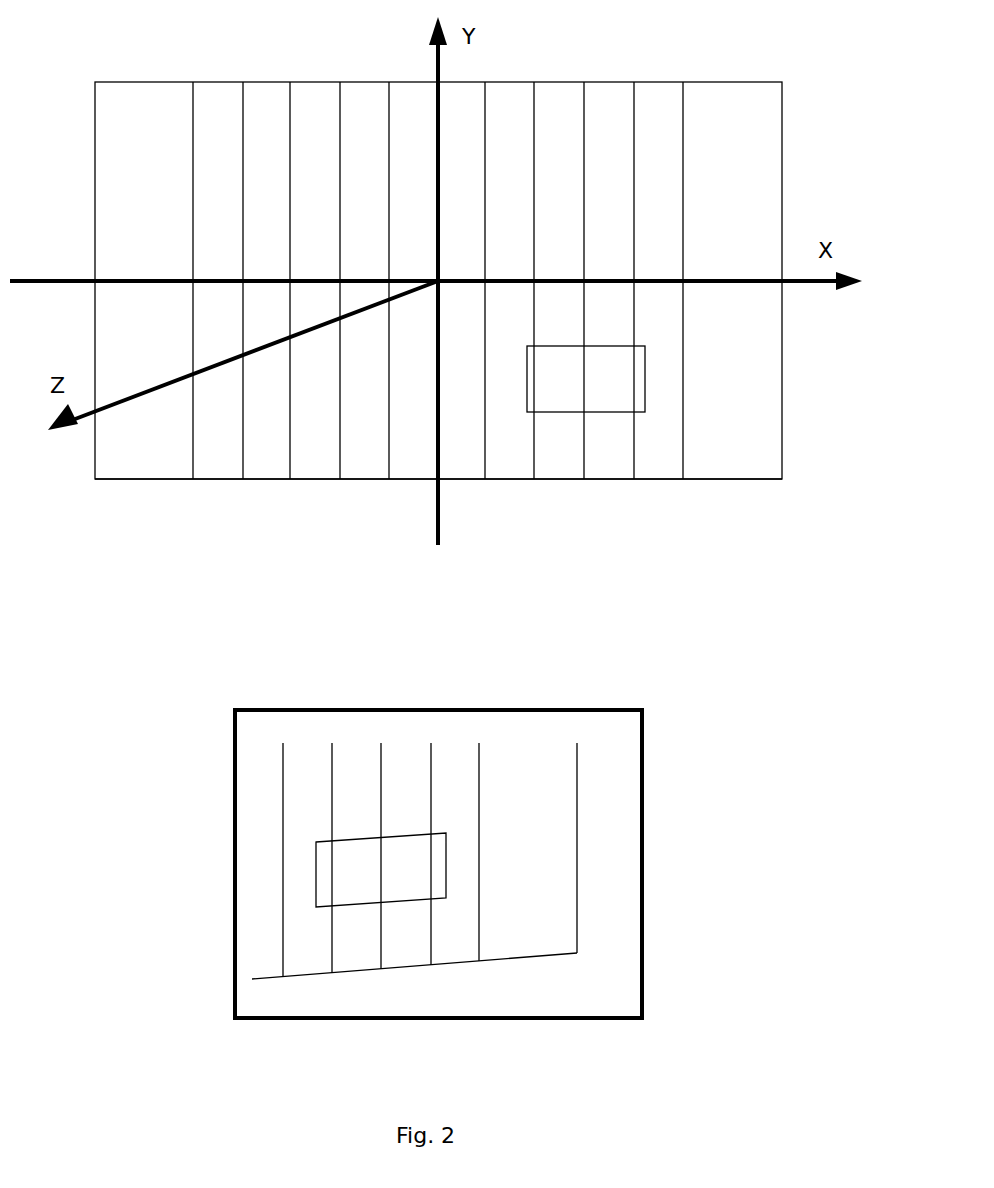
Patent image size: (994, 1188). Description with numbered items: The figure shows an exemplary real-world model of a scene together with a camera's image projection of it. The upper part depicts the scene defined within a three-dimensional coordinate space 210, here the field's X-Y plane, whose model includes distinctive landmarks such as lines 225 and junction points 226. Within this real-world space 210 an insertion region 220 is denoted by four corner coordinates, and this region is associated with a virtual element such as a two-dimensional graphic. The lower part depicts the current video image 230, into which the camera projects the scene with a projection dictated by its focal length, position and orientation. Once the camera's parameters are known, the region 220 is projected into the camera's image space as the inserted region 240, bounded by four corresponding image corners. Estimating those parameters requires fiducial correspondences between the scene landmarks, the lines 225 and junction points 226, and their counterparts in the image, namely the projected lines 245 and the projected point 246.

The 3D coordinate space 210 is at (95, 82).
The region within the real-world space 220 is at (658, 379).
The lines 225 is at (485, 173).
The junction points 226 is at (683, 479).
The video image 230 is at (233, 710).
The camera's image space projection of the region 240 is at (448, 868).
The image points corresponding to lines 245 is at (284, 785).
The projection of the point in the video image space 246 is at (480, 961).